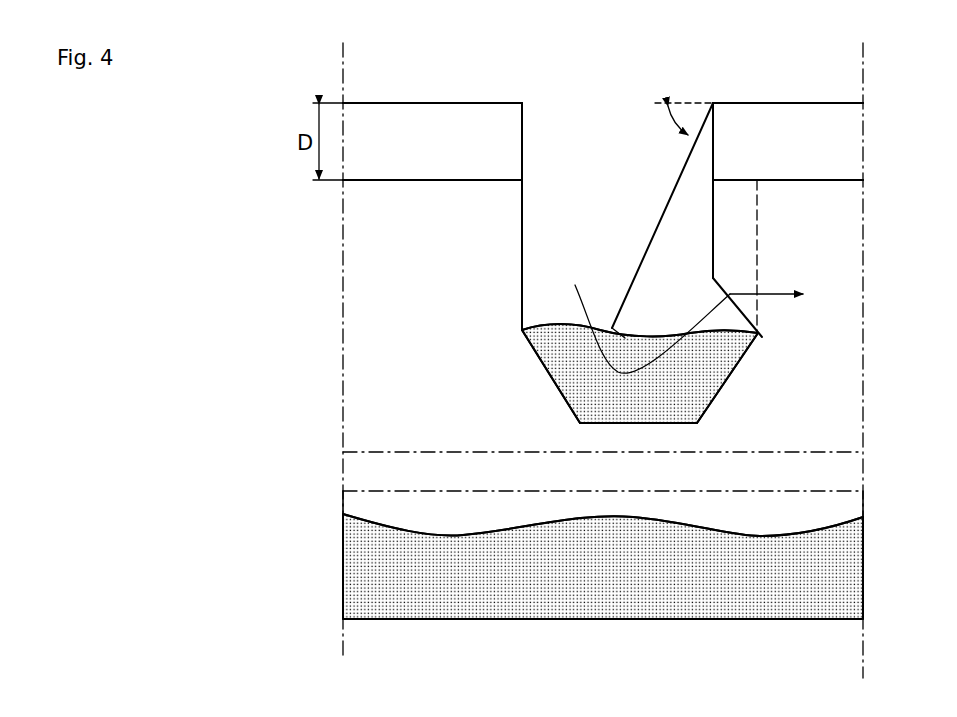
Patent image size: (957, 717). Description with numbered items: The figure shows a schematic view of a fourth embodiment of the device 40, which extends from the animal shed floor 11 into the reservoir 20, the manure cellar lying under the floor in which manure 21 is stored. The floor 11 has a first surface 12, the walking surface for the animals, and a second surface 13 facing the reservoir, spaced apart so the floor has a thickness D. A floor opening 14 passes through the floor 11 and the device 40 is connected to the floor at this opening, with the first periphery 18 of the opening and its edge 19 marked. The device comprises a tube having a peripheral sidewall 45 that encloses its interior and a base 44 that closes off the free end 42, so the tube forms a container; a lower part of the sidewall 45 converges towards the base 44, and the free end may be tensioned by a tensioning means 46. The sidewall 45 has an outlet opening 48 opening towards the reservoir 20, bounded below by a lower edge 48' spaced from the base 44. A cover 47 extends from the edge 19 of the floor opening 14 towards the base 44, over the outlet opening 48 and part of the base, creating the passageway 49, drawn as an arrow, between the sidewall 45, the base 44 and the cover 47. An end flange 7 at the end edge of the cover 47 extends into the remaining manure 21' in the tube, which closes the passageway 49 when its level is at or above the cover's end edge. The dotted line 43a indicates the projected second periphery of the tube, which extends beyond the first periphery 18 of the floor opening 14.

The end flange 7 is at (610, 327).
The animal shed floor 11 is at (412, 127).
The first surface 12 is at (487, 103).
The second surface 13 is at (452, 180).
The floor opening 14 is at (618, 125).
The first periphery 18 is at (522, 133).
The edge of the floor opening 19 is at (713, 103).
The reservoir 20 is at (430, 418).
The manure 21 is at (603, 555).
The remaining manure 21' is at (640, 373).
The device 40 is at (478, 280).
The free end 42 is at (645, 424).
The dotted line 43a is at (757, 232).
The base 44 is at (603, 422).
The peripheral sidewall 45 is at (522, 248).
The tensioning means 46 is at (728, 378).
The cover 47 is at (661, 215).
The outlet opening 48 is at (694, 229).
The lower edge 48' is at (777, 307).
The passageway 49 is at (694, 308).